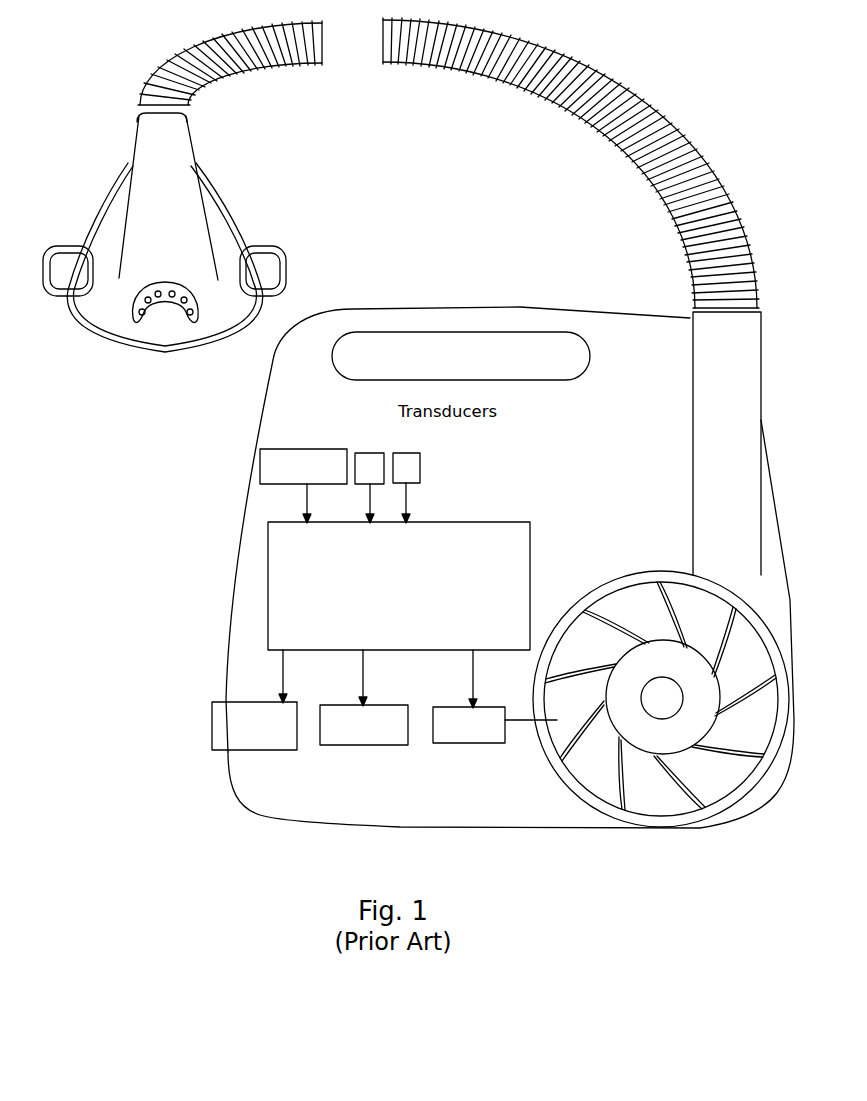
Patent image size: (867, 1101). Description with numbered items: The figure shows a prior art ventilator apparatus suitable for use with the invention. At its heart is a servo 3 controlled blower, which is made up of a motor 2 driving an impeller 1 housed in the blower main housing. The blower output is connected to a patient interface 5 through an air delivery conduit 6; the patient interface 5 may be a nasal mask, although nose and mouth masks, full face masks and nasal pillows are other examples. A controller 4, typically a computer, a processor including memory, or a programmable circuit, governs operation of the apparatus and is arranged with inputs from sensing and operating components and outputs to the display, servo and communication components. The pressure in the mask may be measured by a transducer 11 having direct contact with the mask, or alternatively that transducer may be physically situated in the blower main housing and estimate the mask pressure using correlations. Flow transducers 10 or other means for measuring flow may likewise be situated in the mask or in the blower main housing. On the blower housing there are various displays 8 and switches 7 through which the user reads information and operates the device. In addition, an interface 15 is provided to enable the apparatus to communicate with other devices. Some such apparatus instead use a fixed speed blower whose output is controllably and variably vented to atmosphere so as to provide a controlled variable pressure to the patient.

The impeller 1 is at (731, 766).
The motor 2 is at (658, 648).
The servo 3 is at (487, 737).
The controller 4 is at (399, 615).
The patient interface 5 is at (164, 251).
The air delivery conduit 6 is at (448, 163).
The switches 7 is at (290, 462).
The displays 8 is at (366, 728).
The flow transducers 10 is at (368, 460).
The transducer 11 is at (412, 474).
The interface 15 is at (213, 726).